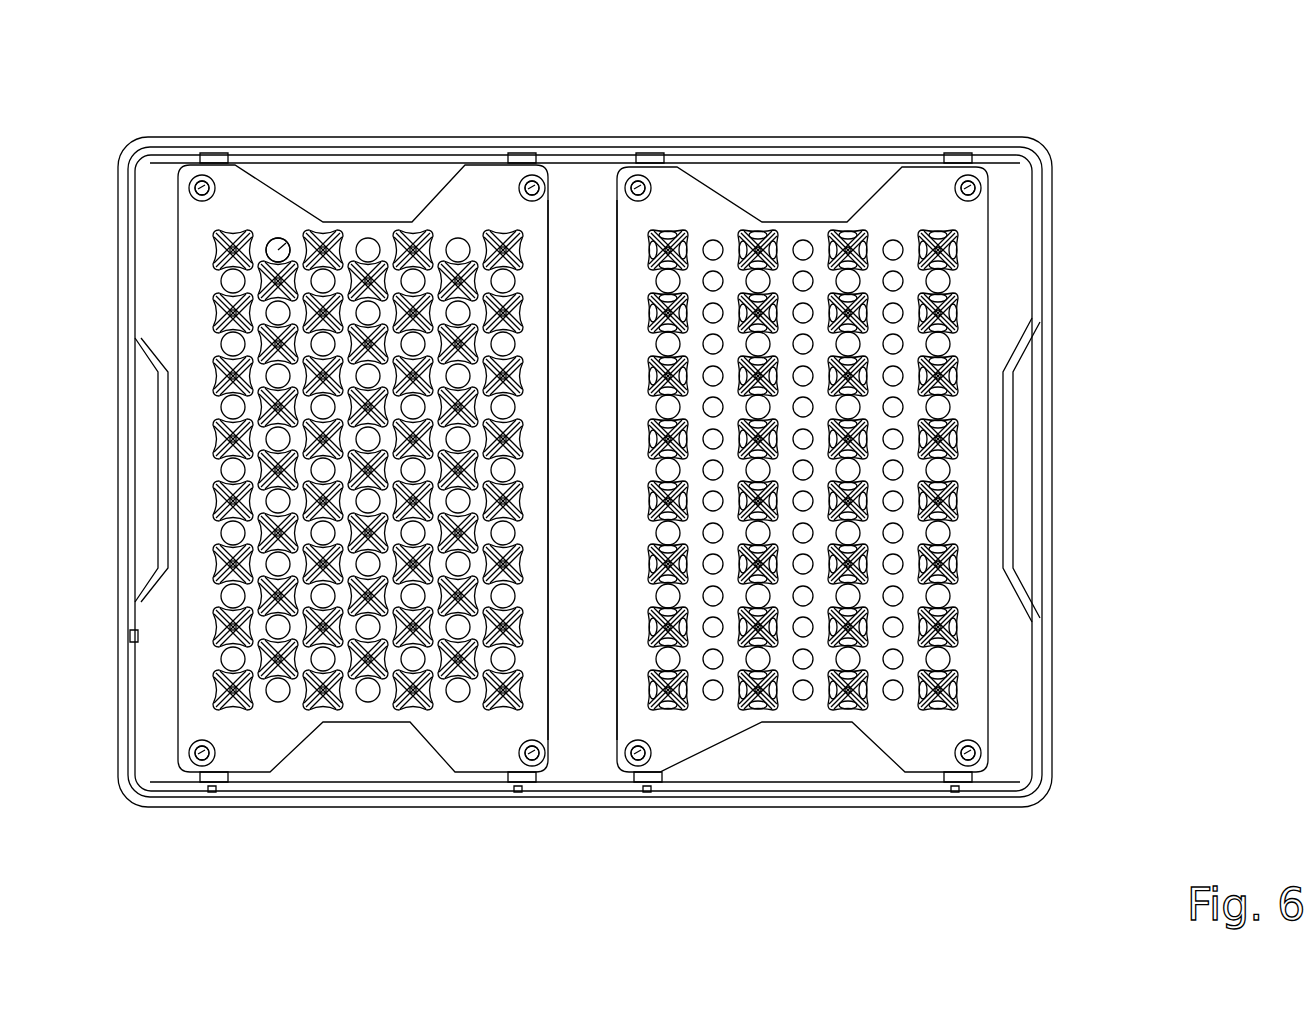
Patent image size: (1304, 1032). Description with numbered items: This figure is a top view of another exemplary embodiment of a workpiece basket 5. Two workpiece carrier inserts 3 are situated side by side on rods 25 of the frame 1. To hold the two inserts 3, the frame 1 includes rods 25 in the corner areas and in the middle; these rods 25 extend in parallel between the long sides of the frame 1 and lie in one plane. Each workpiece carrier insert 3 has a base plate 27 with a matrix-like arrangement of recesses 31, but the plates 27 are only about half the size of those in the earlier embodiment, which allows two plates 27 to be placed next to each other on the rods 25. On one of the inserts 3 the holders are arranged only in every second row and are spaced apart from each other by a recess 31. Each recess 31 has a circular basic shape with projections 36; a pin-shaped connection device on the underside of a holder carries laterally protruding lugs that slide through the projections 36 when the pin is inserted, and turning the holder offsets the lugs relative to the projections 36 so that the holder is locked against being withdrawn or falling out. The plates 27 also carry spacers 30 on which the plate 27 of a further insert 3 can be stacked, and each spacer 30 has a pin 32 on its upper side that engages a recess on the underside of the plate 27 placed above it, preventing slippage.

The frame 1 is at (1048, 232).
The workpiece carrier insert 3 is at (200, 712).
The workpiece basket 5 is at (1052, 112).
The rod 25 is at (214, 155).
The base plate 27 is at (540, 285).
The spacer 30 is at (190, 196).
The recess 31 is at (457, 245).
The pin 32 is at (196, 184).
The projection 36 is at (276, 242).